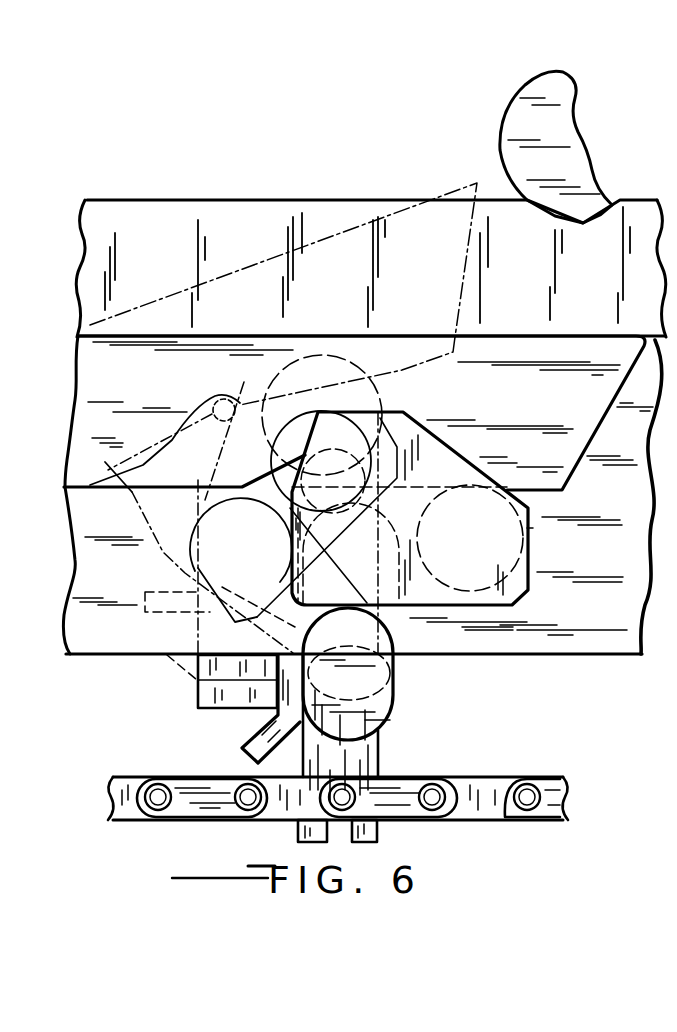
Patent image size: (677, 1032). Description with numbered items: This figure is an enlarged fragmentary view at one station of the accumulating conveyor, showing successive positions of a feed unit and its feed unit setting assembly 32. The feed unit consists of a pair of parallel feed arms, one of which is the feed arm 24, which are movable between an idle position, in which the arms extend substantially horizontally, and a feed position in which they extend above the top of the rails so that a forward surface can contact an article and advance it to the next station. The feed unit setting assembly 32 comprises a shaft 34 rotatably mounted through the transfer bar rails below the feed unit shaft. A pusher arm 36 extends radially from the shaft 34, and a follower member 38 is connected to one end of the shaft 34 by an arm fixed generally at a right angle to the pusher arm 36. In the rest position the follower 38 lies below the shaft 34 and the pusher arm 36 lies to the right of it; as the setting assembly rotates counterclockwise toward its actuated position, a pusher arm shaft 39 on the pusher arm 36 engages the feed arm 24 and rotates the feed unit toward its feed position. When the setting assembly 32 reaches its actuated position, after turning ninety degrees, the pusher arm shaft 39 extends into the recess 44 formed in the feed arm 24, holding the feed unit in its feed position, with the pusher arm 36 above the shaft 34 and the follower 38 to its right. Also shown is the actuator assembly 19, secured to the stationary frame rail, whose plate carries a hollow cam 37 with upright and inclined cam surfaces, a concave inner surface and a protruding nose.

The actuator assembly 19 is at (380, 750).
The feed arm 24 is at (478, 272).
The feed unit setting assembly 32 is at (160, 553).
The shaft 34 is at (190, 524).
The pusher arm 36 is at (161, 430).
The hollow cam 37 is at (243, 750).
The follower member 38 is at (387, 640).
The pusher arm shaft 39 is at (533, 528).
The recess 44 is at (245, 386).